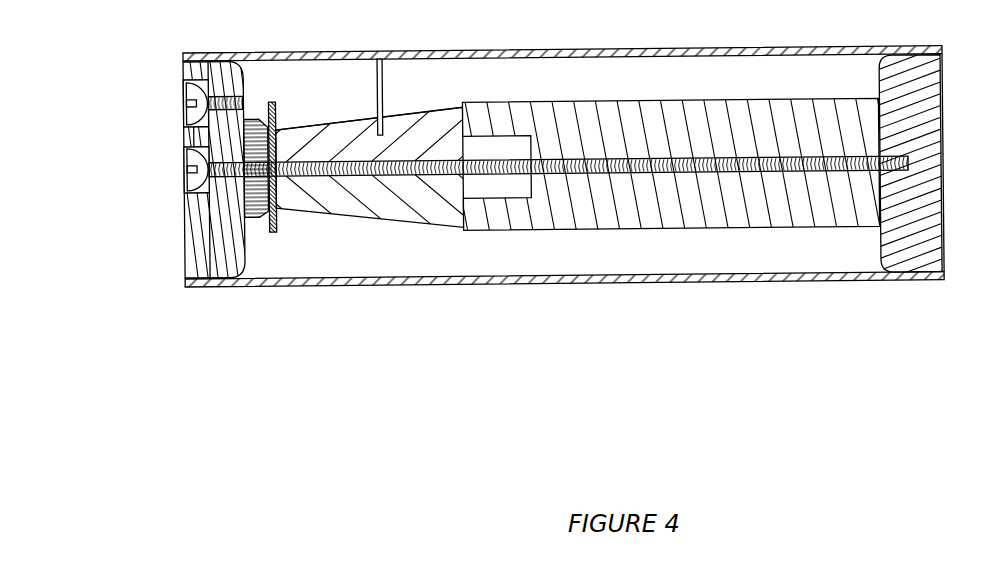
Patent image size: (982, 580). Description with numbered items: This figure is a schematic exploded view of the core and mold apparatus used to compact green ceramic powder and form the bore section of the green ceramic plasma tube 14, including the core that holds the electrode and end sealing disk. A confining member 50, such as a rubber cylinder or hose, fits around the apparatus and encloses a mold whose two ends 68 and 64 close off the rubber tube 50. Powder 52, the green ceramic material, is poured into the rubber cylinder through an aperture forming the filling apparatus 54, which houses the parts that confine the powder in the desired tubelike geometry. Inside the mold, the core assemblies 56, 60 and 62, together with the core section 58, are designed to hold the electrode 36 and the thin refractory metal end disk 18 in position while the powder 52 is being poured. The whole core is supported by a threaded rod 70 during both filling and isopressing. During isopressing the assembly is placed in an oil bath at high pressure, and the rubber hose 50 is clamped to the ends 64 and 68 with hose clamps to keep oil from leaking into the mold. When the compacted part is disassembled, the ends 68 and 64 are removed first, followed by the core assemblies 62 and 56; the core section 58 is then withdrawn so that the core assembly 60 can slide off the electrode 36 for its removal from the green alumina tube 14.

The tube 14 is at (563, 218).
The refractory metal disk 18 is at (277, 229).
The electrode 36 is at (377, 92).
The confining member 50 is at (777, 49).
The powder 52 is at (541, 254).
The apparatus 54 is at (221, 96).
The core assembly 56 is at (250, 218).
The core section 58 is at (409, 211).
The core assembly 60 is at (407, 123).
The core assembly 62 is at (672, 110).
The mold end 64 is at (934, 101).
The mold end 68 is at (192, 245).
The threaded rod 70 is at (682, 173).